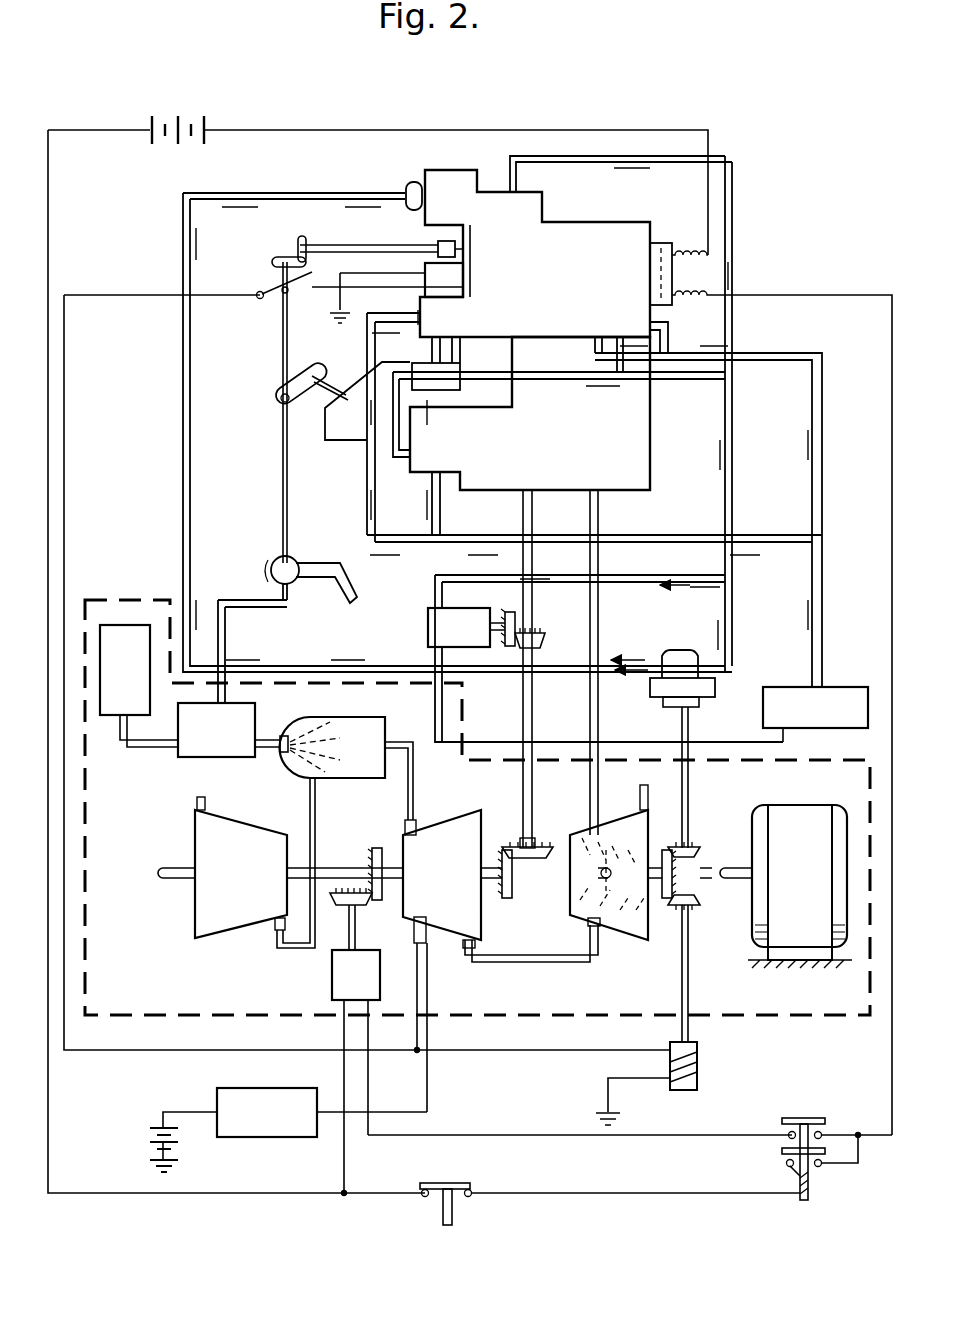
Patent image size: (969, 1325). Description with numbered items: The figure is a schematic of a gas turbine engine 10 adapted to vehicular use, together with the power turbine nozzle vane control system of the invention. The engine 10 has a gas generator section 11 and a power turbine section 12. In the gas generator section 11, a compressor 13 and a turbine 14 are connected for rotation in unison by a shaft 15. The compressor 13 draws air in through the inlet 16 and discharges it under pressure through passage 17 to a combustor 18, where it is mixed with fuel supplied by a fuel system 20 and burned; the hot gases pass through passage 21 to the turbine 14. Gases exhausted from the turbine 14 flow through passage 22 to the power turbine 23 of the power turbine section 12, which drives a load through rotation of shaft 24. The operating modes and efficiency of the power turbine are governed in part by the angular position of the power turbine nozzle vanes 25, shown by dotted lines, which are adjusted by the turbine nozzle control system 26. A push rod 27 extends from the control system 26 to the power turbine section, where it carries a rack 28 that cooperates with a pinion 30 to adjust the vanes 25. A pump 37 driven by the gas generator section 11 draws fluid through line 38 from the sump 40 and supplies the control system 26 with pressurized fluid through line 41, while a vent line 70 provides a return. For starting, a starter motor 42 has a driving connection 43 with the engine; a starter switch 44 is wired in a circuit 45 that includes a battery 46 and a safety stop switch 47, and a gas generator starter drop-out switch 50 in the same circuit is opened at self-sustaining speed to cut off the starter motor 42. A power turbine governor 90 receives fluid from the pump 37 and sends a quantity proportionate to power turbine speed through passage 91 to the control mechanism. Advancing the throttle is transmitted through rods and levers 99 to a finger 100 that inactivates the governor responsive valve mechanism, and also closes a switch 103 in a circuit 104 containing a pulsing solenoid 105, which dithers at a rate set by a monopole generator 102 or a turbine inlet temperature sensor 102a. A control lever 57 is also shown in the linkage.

The gas turbine engine 10 is at (730, 1025).
The gas generator section 11 is at (266, 950).
The power turbine section 12 is at (712, 926).
The compressor 13 is at (198, 930).
The turbine 14 is at (476, 816).
The shaft 15 is at (341, 868).
The inlet 16 is at (196, 802).
The passage 17 is at (310, 952).
The combustor 18 is at (382, 722).
The fuel system 20 is at (200, 758).
The passage 21 is at (414, 792).
The passage 22 is at (530, 963).
The power turbine 23 is at (648, 942).
The shaft 24 is at (702, 865).
The power turbine nozzle vanes 25 is at (605, 864).
The turbine nozzle control system 26 is at (660, 482).
The push rod 27 is at (596, 600).
The rack 28 is at (582, 836).
The pinion 30 is at (570, 906).
The pump 37 is at (428, 614).
The line 38 is at (492, 738).
The sump 40 is at (852, 722).
The line 41 is at (700, 160).
The starter motor 42 is at (332, 986).
The driving connection 43 is at (366, 900).
The starter switch 44 is at (828, 1126).
The circuit 45 is at (520, 1133).
The battery 46 is at (205, 126).
The safety stop switch 47 is at (470, 1186).
The gas generator starter drop-out switch 50 is at (660, 284).
The control lever 57 is at (332, 592).
The vent line 70 is at (366, 494).
The governor 90 is at (662, 700).
The passage 91 is at (290, 193).
The rods and levers 99 is at (278, 420).
The finger 100 is at (465, 244).
The monopole generator 102 is at (686, 1090).
The sensor 102a is at (423, 952).
The switch 103 is at (296, 288).
The circuit 104 is at (66, 440).
The pulsing solenoid 105 is at (464, 290).